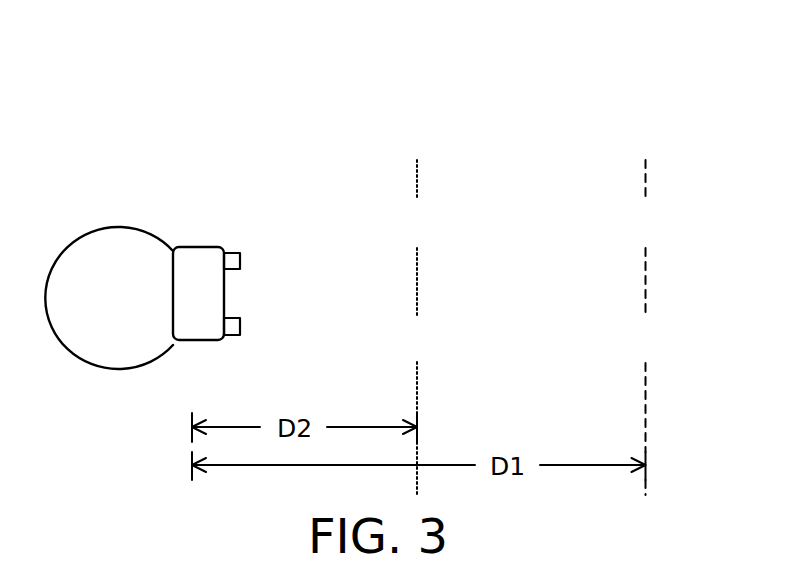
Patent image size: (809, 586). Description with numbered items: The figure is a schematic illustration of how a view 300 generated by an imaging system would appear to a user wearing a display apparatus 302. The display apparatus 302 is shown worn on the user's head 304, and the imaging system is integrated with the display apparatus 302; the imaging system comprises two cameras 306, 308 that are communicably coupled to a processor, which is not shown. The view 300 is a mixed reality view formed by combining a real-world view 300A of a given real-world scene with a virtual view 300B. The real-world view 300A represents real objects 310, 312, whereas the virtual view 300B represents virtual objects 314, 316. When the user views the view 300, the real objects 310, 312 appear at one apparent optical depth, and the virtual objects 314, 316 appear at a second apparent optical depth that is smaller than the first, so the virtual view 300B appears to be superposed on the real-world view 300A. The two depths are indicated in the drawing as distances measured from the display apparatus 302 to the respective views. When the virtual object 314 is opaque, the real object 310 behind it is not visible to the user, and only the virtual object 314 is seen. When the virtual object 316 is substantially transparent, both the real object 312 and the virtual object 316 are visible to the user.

The view 300 is at (736, 59).
The real-world view 300A is at (653, 142).
The virtual view 300B is at (428, 140).
The display apparatus 302 is at (187, 247).
The head 304 is at (88, 230).
The camera 306 is at (228, 253).
The camera 308 is at (230, 337).
The real object 310 is at (647, 262).
The real object 312 is at (647, 411).
The virtual object 314 is at (419, 263).
The virtual object 316 is at (420, 411).